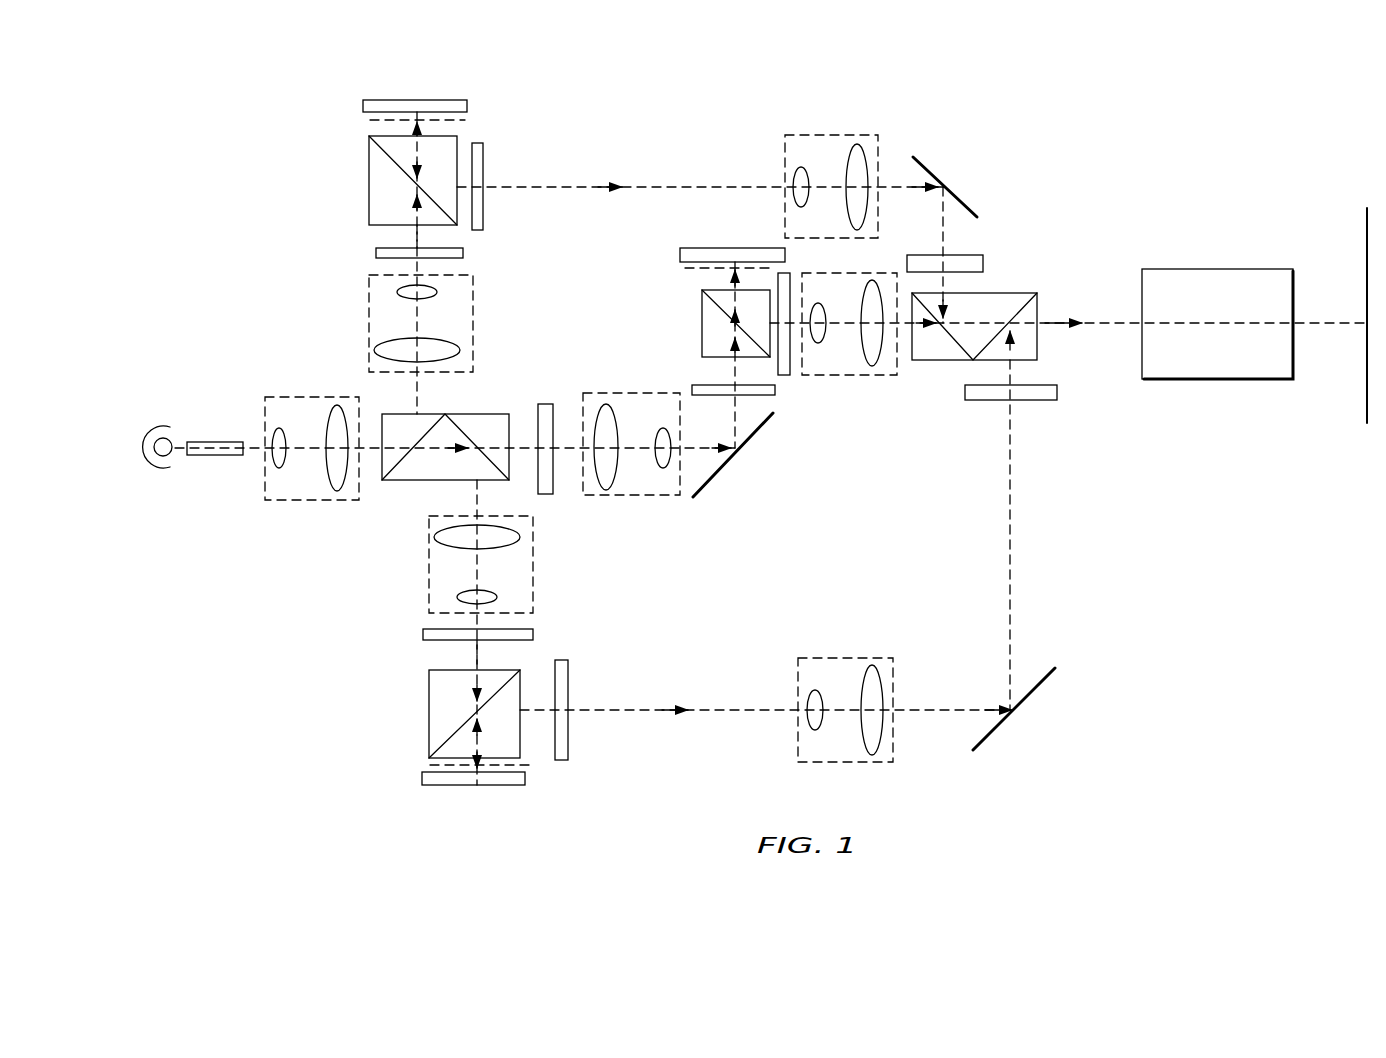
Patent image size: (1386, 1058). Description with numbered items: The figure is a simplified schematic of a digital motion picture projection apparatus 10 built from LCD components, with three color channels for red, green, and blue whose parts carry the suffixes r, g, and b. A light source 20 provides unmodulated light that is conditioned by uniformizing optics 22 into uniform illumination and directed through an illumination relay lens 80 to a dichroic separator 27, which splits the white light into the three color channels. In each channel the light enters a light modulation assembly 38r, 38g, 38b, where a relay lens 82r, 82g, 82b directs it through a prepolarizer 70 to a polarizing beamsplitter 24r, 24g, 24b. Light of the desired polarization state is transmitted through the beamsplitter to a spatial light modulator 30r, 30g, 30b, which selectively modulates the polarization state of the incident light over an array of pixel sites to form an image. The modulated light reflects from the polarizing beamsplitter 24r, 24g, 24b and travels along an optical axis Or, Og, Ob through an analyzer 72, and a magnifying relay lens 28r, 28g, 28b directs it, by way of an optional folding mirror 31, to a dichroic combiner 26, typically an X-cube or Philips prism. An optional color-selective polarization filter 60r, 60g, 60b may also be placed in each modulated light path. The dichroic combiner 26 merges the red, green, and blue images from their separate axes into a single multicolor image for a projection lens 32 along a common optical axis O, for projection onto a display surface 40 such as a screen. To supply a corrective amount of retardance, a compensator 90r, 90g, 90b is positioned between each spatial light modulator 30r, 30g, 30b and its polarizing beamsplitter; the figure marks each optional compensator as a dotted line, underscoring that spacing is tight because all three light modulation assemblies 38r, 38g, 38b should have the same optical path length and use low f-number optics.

The digital motion picture projection apparatus 10 is at (1218, 566).
The light source 20 is at (165, 477).
The uniformizing optics 22 is at (213, 457).
The polarizing beamsplitter 24b is at (377, 150).
The polarizing beamsplitter 24g is at (713, 305).
The polarizing beamsplitter 24r is at (430, 723).
The dichroic combiner 26 is at (940, 362).
The dichroic separator 27 is at (473, 413).
The magnifying relay lens 28b is at (828, 135).
The magnifying relay lens 28g is at (865, 378).
The magnifying relay lens 28r is at (843, 657).
The spatial light modulator 30b is at (377, 101).
The spatial light modulator 30g is at (710, 247).
The spatial light modulator 30r is at (435, 785).
The folding mirror 31 is at (957, 190).
The projection lens 32 is at (1218, 380).
The light modulation assembly 38b is at (333, 257).
The light modulation assembly 38g is at (777, 492).
The light modulation assembly 38r is at (532, 809).
The display surface 40 is at (1362, 235).
The color-selective polarization filter 60b is at (973, 253).
The color-selective polarization filter 60g is at (547, 494).
The color-selective polarization filter 60r is at (1040, 400).
The prepolarizer 70 is at (463, 253).
The analyzer 72 is at (485, 160).
The illumination relay lens 80 is at (303, 397).
The relay lens 82b is at (473, 303).
The relay lens 82g is at (650, 497).
The relay lens 82r is at (428, 587).
The compensator 90b is at (370, 120).
The compensator 90g is at (685, 268).
The compensator 90r is at (420, 765).
The optical axis Ob is at (693, 187).
The optical axis Og is at (903, 330).
The optical axis Or is at (737, 710).
The common optical axis O is at (1088, 315).